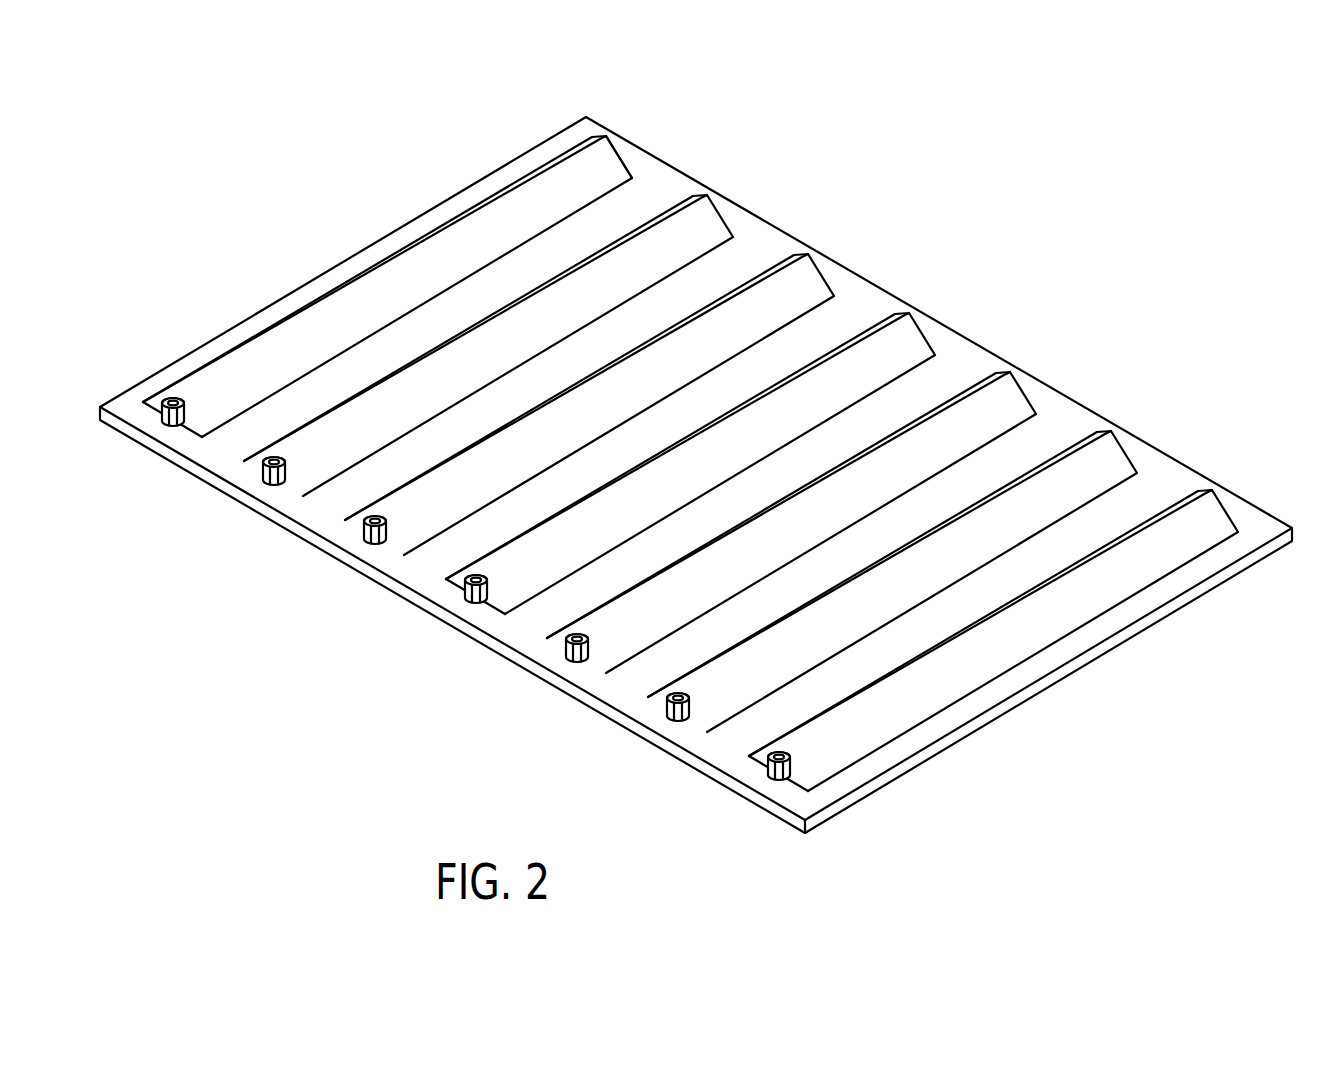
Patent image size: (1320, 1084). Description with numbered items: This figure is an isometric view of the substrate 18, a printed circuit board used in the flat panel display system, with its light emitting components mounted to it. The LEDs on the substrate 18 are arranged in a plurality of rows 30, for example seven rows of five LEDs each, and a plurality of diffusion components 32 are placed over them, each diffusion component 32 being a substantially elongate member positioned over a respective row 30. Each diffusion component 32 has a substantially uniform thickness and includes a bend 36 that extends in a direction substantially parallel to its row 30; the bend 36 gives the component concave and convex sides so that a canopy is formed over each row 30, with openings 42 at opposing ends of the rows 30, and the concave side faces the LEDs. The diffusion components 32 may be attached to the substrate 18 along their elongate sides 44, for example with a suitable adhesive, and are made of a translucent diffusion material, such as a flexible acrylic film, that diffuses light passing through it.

The substrate 18 is at (123, 398).
The rows 30 is at (812, 233).
The diffusion components 32 is at (612, 157).
The bend 36 is at (700, 198).
The openings 42 is at (940, 320).
The elongate sides 44 is at (313, 493).